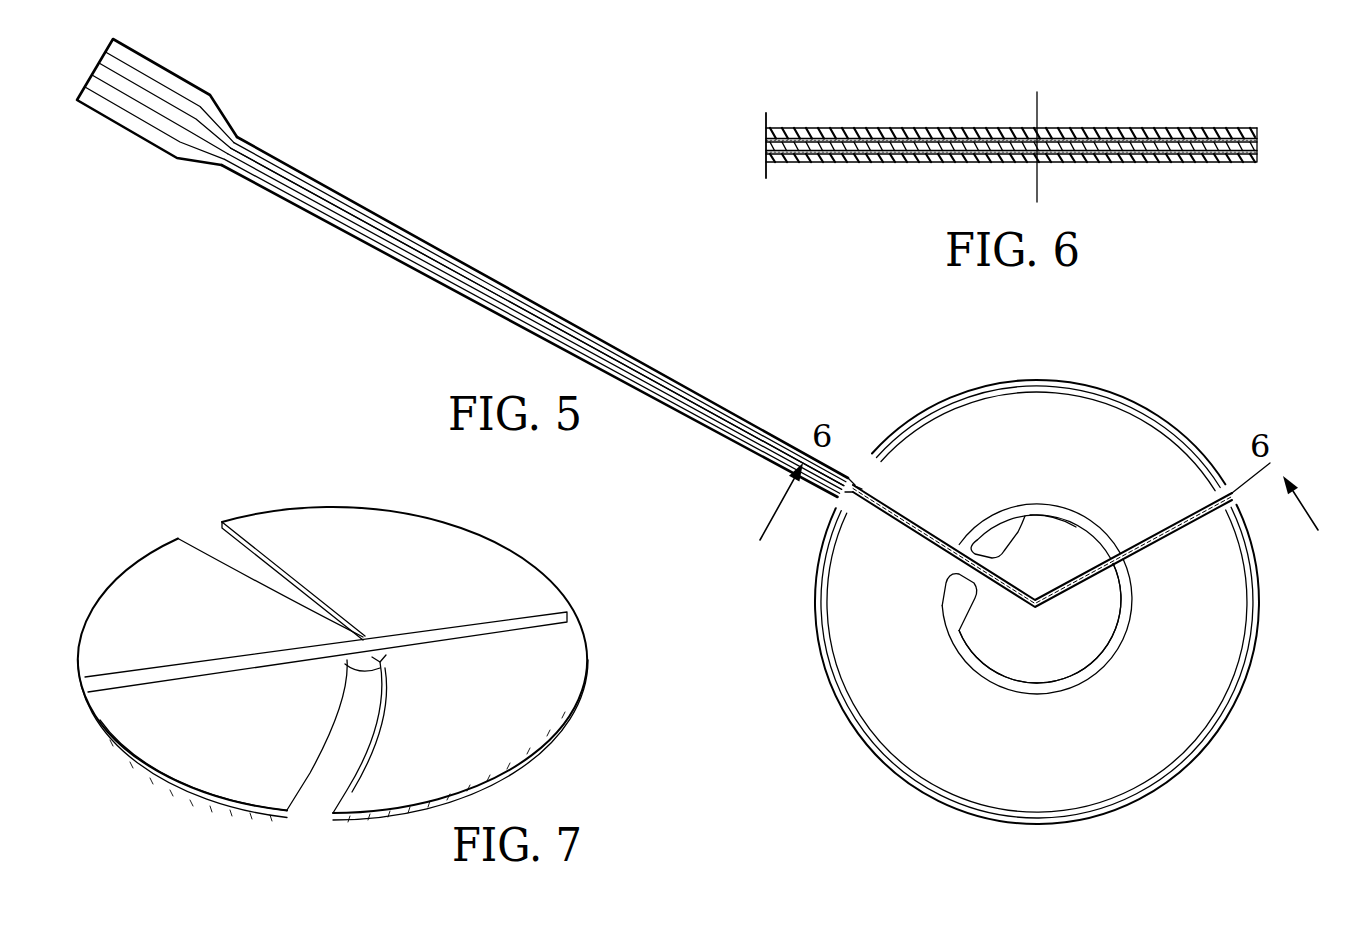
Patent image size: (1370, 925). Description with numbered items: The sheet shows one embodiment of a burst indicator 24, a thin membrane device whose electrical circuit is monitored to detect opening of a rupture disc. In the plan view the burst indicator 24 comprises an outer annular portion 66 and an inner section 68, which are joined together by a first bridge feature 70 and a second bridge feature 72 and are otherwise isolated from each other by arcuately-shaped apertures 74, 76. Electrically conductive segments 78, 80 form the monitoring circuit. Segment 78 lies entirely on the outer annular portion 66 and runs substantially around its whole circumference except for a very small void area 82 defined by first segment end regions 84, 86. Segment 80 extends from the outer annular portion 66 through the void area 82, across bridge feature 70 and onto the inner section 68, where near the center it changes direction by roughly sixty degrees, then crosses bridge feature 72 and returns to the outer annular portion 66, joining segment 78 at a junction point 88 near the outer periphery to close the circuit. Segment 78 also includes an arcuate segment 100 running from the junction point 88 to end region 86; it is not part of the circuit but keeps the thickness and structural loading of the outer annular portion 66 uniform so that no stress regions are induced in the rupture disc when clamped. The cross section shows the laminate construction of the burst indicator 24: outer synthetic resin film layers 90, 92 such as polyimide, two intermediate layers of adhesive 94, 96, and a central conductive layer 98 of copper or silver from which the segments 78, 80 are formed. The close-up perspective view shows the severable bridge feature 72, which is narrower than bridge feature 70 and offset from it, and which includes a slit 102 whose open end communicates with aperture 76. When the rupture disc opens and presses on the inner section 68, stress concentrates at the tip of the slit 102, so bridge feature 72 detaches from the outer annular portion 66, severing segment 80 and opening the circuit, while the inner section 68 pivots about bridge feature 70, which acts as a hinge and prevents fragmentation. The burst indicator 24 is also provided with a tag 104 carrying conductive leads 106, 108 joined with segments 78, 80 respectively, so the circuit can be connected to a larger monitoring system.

In FIG. 5, the burst indicator 24 is at (1037, 569).
In FIG. 6, the burst indicator 24 is at (1013, 131).
In FIG. 5, the outer annular portion 66 is at (1050, 405).
In FIG. 7, the outer annular portion 66 is at (452, 550).
In FIG. 5, the inner section 68 is at (1020, 655).
In FIG. 7, the inner section 68 is at (200, 752).
In FIG. 5, the first bridge feature 70 is at (960, 540).
In FIG. 5, the second bridge feature 72 is at (1112, 565).
In FIG. 7, the second bridge feature 72 is at (330, 668).
In FIG. 5, the arcuately-shaped aperture 74 is at (1058, 515).
In FIG. 7, the arcuately-shaped aperture 74 is at (215, 540).
In FIG. 5, the arcuately-shaped aperture 76 is at (962, 655).
In FIG. 7, the arcuately-shaped aperture 76 is at (320, 793).
In FIG. 5, the electrically conductive segment 78 is at (853, 722).
In FIG. 5, the electrically conductive segment 80 is at (922, 565).
In FIG. 7, the electrically conductive segment 80 is at (185, 673).
In FIG. 5, the void area 82 is at (843, 470).
In FIG. 5, the first segment end region 84 is at (856, 504).
In FIG. 5, the first segment end region 86 is at (862, 489).
In FIG. 5, the junction point 88 is at (1215, 500).
In FIG. 6, the outer synthetic resin film layer 90 is at (1198, 132).
In FIG. 6, the outer synthetic resin film layer 92 is at (1210, 163).
In FIG. 6, the adhesive layer 94 is at (1258, 141).
In FIG. 6, the adhesive layer 96 is at (1258, 152).
In FIG. 6, the central conductive layer 98 is at (767, 146).
In FIG. 5, the arcuate segment 100 is at (1140, 410).
In FIG. 7, the slit 102 is at (392, 664).
In FIG. 5, the tag 104 is at (228, 120).
In FIG. 5, the conductive lead 106 is at (478, 292).
In FIG. 5, the conductive lead 108 is at (487, 284).